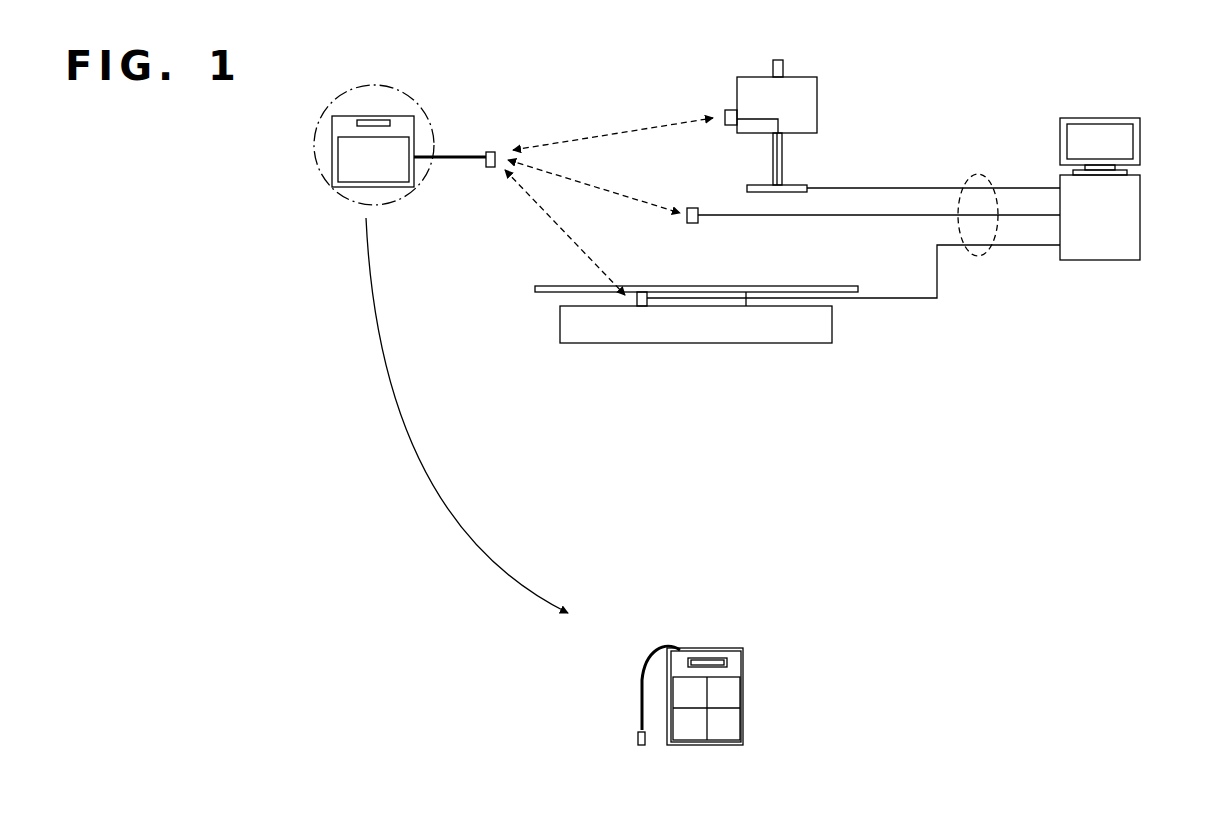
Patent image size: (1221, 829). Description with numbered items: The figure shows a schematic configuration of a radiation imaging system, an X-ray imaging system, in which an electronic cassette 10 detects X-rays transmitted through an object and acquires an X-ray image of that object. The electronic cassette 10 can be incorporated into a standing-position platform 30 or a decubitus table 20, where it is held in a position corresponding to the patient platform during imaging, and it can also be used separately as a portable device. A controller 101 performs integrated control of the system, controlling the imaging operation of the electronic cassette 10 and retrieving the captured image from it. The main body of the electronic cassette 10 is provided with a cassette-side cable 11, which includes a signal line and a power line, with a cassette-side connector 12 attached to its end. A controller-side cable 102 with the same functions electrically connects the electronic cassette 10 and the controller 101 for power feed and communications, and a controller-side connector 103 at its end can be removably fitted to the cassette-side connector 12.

The electronic cassette 10 is at (345, 116).
The cassette-side cable 11 is at (458, 155).
The cassette-side connector 12 is at (491, 152).
The decubitus table 20 is at (568, 327).
The standing-position platform 30 is at (813, 105).
The controller 101 is at (1132, 220).
The controller-side cable 102 is at (975, 175).
The controller-side connector 103 is at (727, 110).